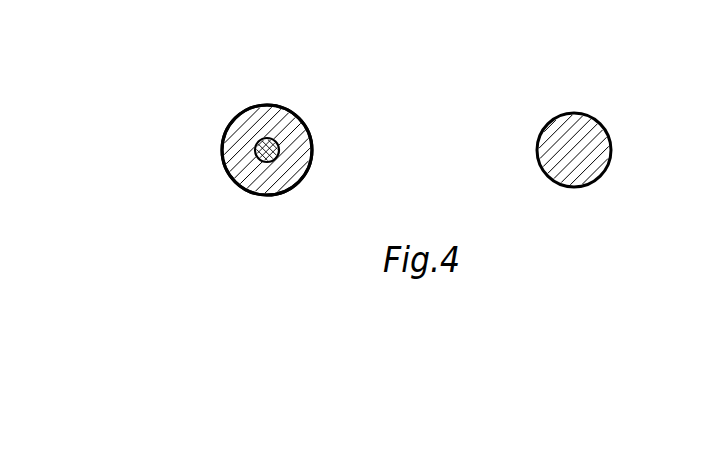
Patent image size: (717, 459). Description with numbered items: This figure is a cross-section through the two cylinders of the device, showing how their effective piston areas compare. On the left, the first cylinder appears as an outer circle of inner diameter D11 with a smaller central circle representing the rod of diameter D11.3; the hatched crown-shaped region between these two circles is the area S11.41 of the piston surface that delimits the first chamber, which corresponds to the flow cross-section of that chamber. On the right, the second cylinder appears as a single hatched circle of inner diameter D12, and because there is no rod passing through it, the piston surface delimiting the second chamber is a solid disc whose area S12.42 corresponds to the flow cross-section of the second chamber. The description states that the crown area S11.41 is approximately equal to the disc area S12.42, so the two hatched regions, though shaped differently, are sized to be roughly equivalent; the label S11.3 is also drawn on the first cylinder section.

The inner diameter of the cylinder 11 D11 is at (244, 160).
The diameter of the rod D11.3 is at (223, 132).
The cross-section of first conductor S11.3 is at (300, 130).
The area of the surface 11.41 S11.41 is at (240, 162).
The inner diameter of the cylinder 12 D12 is at (539, 137).
The area of the surface 12.42 S12.42 is at (588, 122).